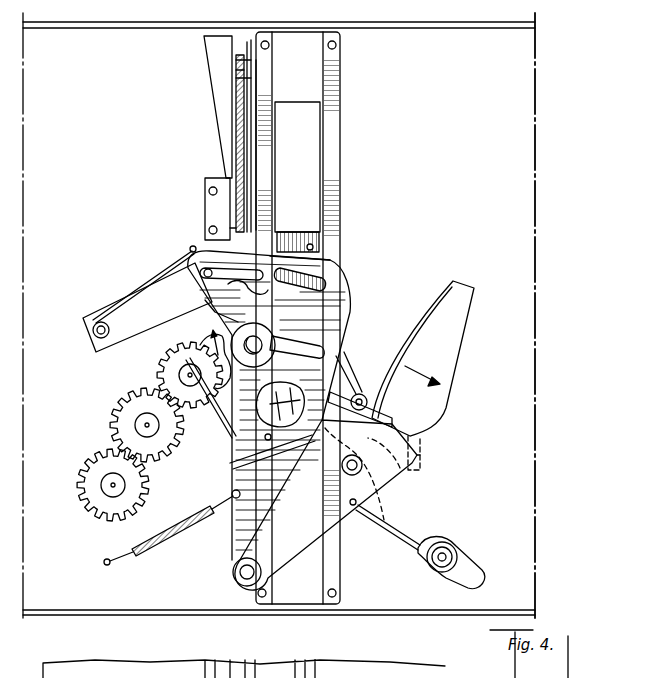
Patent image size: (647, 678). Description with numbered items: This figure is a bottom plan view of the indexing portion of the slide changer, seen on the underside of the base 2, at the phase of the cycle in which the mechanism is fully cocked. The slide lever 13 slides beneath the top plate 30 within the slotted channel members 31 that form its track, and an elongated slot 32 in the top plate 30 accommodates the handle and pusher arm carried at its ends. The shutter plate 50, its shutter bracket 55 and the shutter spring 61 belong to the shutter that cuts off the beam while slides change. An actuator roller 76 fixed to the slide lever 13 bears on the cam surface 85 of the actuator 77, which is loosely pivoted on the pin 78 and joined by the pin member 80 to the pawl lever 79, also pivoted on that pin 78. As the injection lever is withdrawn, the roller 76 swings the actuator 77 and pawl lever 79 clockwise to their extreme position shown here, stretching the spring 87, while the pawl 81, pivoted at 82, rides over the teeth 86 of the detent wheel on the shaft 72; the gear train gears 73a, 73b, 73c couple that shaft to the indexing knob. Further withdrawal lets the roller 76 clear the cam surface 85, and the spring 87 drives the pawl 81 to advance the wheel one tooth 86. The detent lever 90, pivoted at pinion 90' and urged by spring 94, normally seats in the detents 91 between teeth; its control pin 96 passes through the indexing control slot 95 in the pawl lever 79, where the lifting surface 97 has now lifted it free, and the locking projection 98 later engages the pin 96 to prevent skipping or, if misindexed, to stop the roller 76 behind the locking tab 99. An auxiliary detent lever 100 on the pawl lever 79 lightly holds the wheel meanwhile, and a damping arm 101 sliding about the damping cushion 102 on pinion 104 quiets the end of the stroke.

The base 2 is at (543, 104).
The top plate 30 is at (437, 117).
The slotted channel members 31 is at (338, 82).
The elongated slot 32 is at (318, 157).
The slide lever 13 is at (296, 240).
The shutter plate 50 is at (236, 120).
The shutter spring 61 is at (238, 143).
The shutter bracket 55 is at (208, 181).
The pawl lever 79 is at (345, 312).
The shaft 72 is at (260, 344).
The control pin 96 is at (206, 276).
The lifting surface 97 is at (240, 285).
The indexing control slot 95 is at (326, 282).
The locking projection 98 is at (300, 262).
The detent lever 90 is at (147, 307).
The pinion 90' is at (88, 348).
The spring 94 is at (168, 263).
The detents 91 is at (203, 322).
The gear train gear 73c is at (160, 374).
The gear train gear 73b is at (122, 412).
The gear train gear 73a is at (100, 464).
The auxiliary detent lever 100 is at (203, 412).
The teeth 86 is at (268, 392).
The actuator roller 76 is at (360, 396).
The actuator 77 is at (452, 345).
The cam surface 85 is at (396, 346).
The locking tab 99 is at (421, 462).
The pawl pivot 82 is at (370, 441).
The pin member 80 is at (346, 473).
The pawl 81 is at (292, 456).
The spring 87 is at (176, 522).
The pin 78 is at (232, 574).
The damping arm 101 is at (406, 536).
The damping cushion 102 is at (452, 546).
The pinion 104 is at (440, 562).